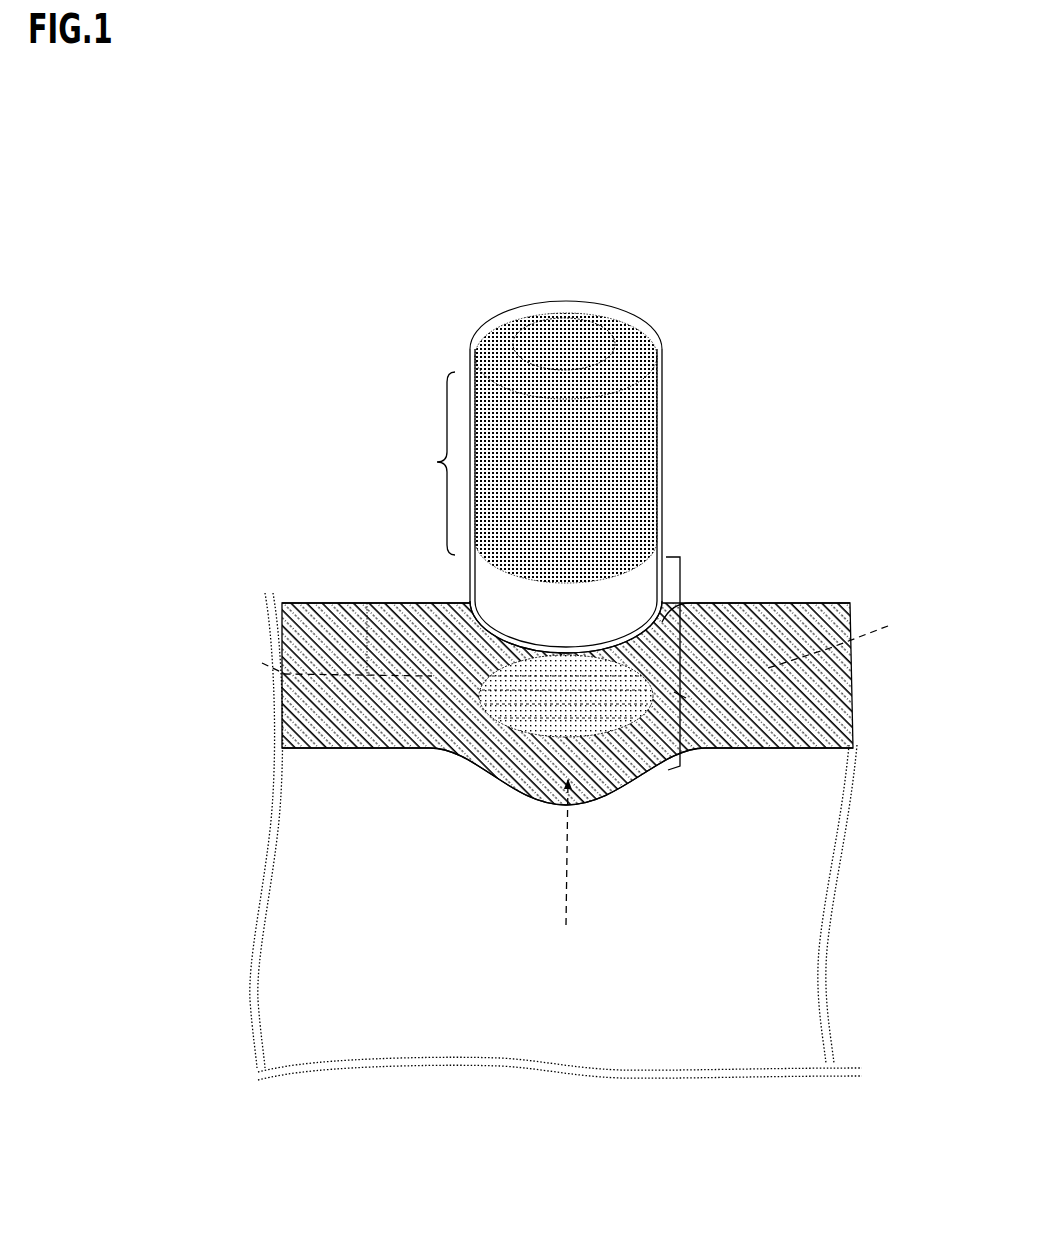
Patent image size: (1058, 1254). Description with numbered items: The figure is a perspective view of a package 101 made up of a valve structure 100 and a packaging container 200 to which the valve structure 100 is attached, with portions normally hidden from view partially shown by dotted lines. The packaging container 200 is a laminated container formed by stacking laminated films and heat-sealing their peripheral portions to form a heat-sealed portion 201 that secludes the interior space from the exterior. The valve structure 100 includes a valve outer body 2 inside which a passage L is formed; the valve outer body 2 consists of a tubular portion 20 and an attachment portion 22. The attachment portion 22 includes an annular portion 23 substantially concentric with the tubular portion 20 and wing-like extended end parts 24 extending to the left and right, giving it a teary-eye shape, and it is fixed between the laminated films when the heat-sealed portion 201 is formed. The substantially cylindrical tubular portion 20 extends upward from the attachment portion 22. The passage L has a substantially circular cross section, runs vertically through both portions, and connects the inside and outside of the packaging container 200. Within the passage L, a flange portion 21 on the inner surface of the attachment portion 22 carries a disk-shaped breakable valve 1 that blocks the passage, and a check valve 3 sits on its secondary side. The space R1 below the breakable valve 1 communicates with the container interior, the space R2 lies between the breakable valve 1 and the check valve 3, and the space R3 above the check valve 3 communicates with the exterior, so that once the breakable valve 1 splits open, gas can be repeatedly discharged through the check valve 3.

The breakable valve 1 is at (552, 722).
The valve outer body 2 is at (700, 404).
The check valve 3 is at (612, 480).
The tubular portion 20 is at (664, 453).
The flange portion 21 is at (465, 760).
The attachment portion 22 is at (695, 608).
The annular portion 23 is at (468, 601).
The extended end parts 24 is at (575, 641).
The valve structure 100 is at (452, 330).
The package 101 is at (100, 502).
The packaging container 200 is at (300, 595).
The heat-sealed portion 201 is at (795, 625).
The passage L is at (557, 874).
The space on the primary side of the breakable valve R1 is at (680, 727).
The space between the breakable valve and the check valve R2 is at (680, 637).
The space on the secondary side of the check valve R3 is at (414, 463).